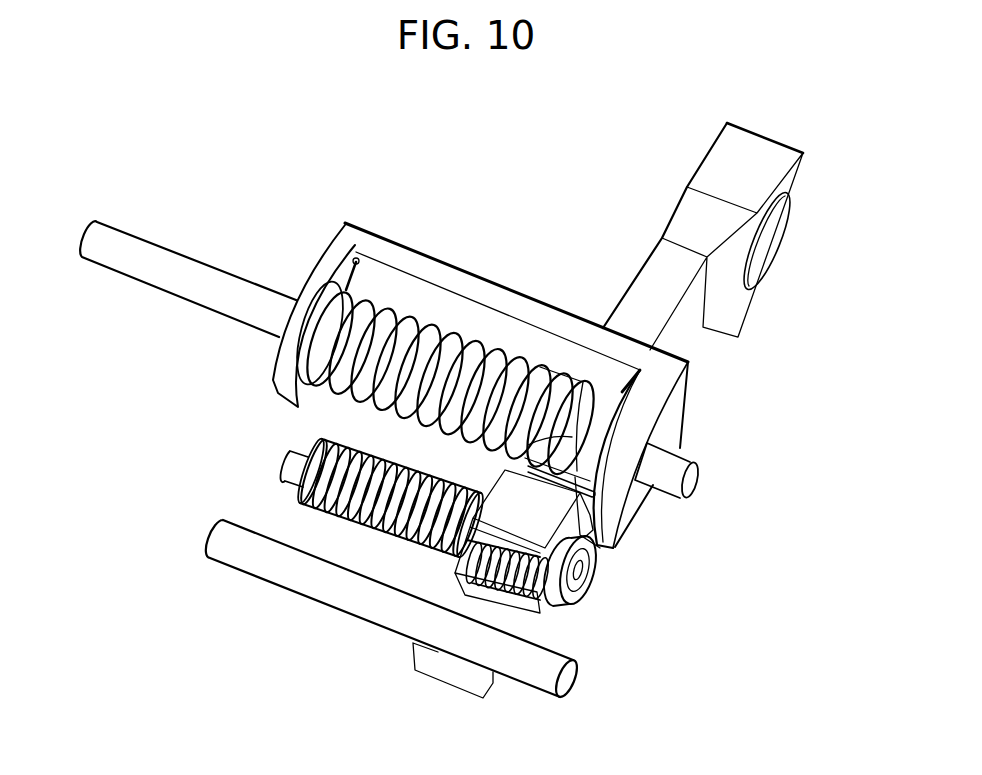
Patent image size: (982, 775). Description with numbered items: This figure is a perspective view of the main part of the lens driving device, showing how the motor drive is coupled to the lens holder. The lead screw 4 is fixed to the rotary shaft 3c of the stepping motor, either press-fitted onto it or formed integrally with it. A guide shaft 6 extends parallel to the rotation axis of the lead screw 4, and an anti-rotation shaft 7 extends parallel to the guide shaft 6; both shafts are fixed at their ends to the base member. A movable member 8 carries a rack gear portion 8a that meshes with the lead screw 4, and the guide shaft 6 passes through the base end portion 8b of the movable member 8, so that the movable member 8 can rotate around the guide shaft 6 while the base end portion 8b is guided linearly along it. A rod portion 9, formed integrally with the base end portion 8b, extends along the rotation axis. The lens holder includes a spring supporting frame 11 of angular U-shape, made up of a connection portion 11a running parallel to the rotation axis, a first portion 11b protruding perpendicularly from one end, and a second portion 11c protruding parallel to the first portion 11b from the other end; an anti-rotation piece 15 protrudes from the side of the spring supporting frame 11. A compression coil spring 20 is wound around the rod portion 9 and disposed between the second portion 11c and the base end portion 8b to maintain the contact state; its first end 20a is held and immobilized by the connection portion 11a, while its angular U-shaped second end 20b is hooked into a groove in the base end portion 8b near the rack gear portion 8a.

The rotary shaft 3c is at (313, 446).
The lead screw 4 is at (332, 515).
The guide shaft 6 is at (193, 295).
The anti-rotation shaft 7 is at (343, 602).
The movable member 8 is at (560, 440).
The rack gear portion 8a is at (480, 540).
The base end portion 8b is at (676, 446).
The rod portion 9 is at (527, 393).
The spring supporting frame 11 is at (533, 335).
The connection portion 11a is at (508, 290).
The first portion 11b is at (667, 428).
The second portion 11c is at (323, 259).
The anti-rotation piece 15 is at (510, 624).
The compression coil spring 20 is at (433, 320).
The first end 20a is at (360, 278).
The second end 20b is at (600, 487).